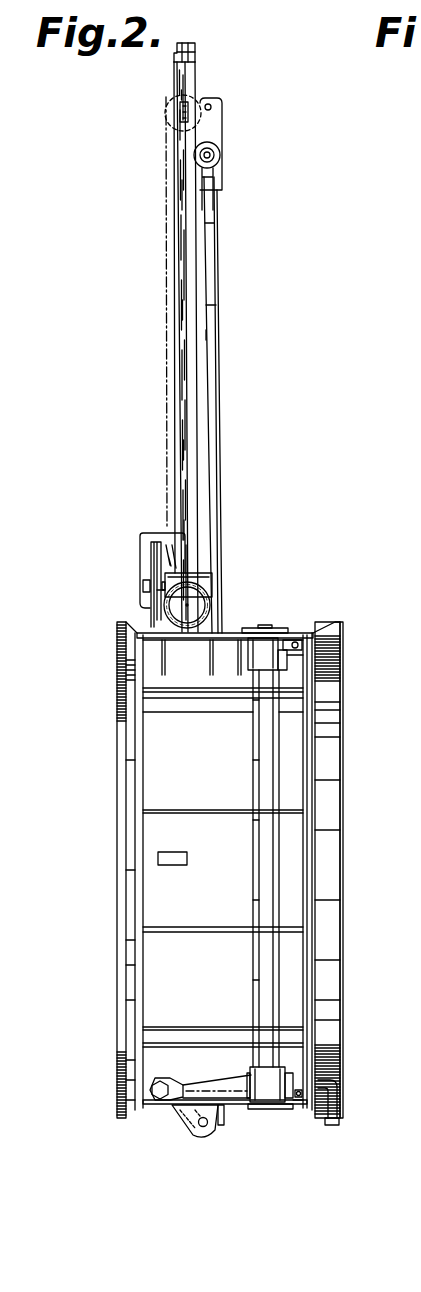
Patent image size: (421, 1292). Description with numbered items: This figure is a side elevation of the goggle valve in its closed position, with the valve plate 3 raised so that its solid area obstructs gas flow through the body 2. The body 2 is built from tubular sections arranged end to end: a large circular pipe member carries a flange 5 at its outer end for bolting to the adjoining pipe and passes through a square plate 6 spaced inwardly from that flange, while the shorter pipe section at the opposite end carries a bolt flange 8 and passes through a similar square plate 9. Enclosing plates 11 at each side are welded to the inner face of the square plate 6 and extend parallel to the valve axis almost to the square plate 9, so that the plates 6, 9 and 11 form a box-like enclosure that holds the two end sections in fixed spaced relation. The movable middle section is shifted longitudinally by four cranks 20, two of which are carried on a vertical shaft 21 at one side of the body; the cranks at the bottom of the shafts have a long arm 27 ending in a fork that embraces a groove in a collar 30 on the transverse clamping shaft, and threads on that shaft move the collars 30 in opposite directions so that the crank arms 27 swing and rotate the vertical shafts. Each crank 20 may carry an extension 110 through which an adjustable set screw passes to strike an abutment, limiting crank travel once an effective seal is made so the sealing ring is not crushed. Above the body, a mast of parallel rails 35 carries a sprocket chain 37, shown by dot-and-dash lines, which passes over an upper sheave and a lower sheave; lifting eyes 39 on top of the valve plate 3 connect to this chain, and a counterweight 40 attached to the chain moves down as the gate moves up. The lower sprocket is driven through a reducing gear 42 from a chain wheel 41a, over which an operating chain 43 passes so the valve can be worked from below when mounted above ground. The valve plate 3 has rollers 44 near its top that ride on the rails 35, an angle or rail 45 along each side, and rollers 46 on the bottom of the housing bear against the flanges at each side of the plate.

The body 2 is at (222, 753).
The valve plate 3 is at (208, 333).
The flange 5 is at (120, 775).
The square plate 6 is at (134, 883).
The bolt flange 8 is at (344, 780).
The square plate 9 is at (312, 890).
The enclosing plates 11 is at (150, 688).
The cranks 20 is at (285, 658).
The vertical shaft 21 is at (274, 738).
The long arm 27 is at (232, 1086).
The collar 30 is at (155, 1100).
The parallel rails 35 is at (178, 272).
The sprocket chain 37 is at (166, 368).
The lifting eyes 39 is at (214, 106).
The counterweight 40 is at (146, 540).
The chain wheel 41a is at (160, 590).
The reducing gear 42 is at (213, 580).
The operating chain 43 is at (150, 647).
The rollers 44 is at (220, 155).
The angle or rail 45 is at (218, 276).
The rollers 46 is at (198, 1132).
The extension 110 is at (285, 648).